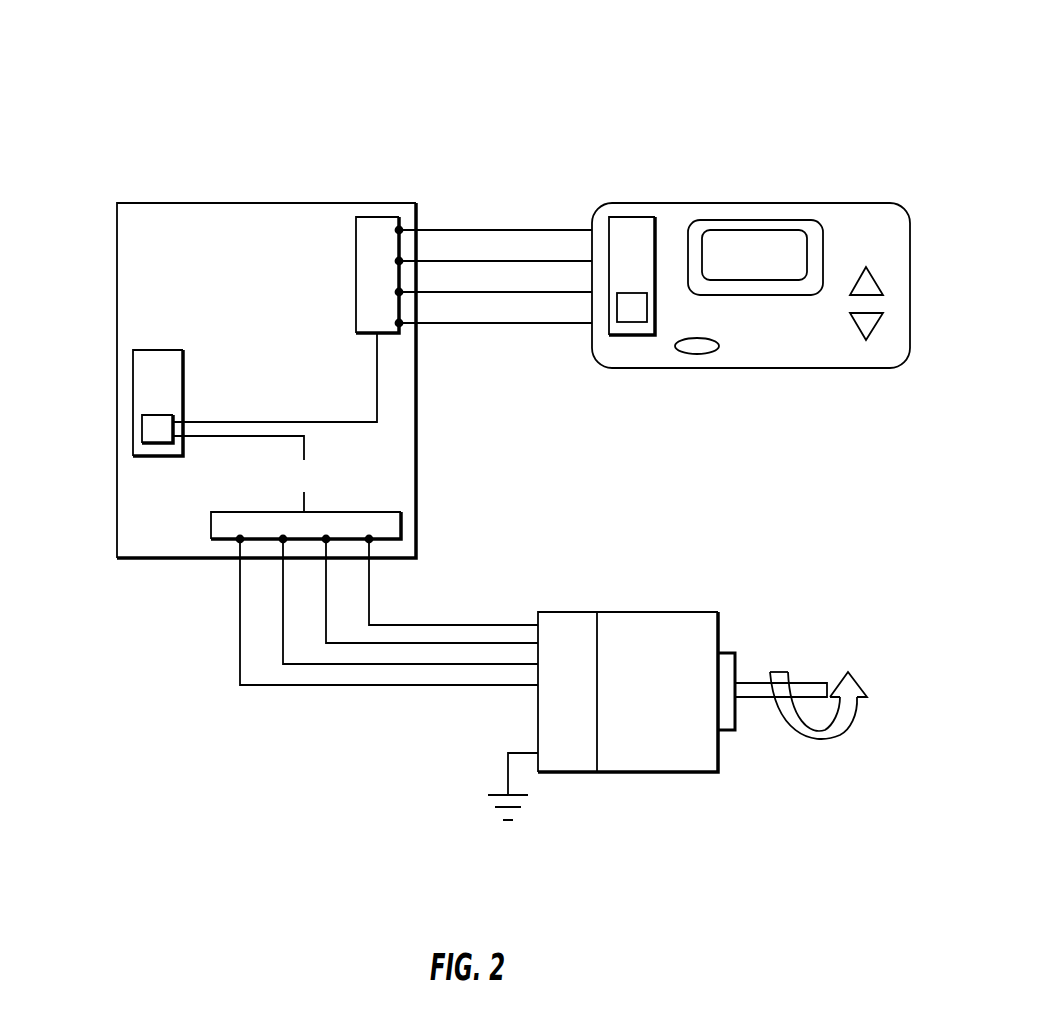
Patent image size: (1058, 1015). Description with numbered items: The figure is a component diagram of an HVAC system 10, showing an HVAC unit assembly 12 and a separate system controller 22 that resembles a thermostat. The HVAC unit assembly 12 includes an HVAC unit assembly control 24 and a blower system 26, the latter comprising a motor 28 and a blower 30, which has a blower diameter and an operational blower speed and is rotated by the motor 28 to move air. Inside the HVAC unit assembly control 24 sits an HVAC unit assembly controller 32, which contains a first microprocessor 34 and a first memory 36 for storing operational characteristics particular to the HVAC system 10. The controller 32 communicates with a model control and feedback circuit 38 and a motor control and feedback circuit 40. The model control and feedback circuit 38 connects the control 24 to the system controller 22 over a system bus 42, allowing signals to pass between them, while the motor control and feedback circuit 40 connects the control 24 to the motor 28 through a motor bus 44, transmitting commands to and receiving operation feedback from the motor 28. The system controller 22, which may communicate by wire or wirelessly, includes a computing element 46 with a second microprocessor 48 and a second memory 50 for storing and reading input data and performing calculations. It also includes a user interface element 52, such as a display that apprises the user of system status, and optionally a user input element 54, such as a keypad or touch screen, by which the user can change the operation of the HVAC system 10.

The HVAC system 10 is at (822, 58).
The HVAC unit assembly 12 is at (84, 208).
The system controller 22 is at (740, 203).
The HVAC unit assembly control 24 is at (288, 203).
The blower system 26 is at (838, 795).
The motor 28 is at (650, 612).
The blower 30 is at (802, 678).
The HVAC unit assembly controller 32 is at (133, 448).
The first microprocessor 34 is at (142, 430).
The first memory 36 is at (152, 378).
The model control and feedback circuit 38 is at (398, 335).
The motor control and feedback circuit 40 is at (401, 513).
The system bus 42 is at (468, 292).
The motor bus 44 is at (370, 587).
The computing element 46 is at (628, 217).
The second microprocessor 48 is at (627, 308).
The second memory 50 is at (626, 240).
The user interface element 52 is at (757, 295).
The user input element 54 is at (872, 322).